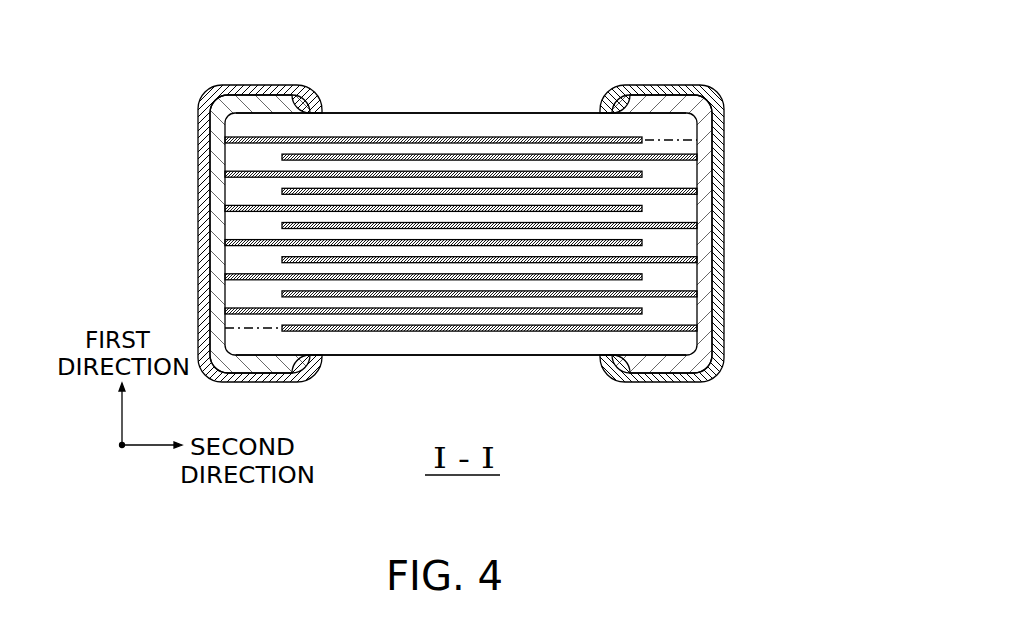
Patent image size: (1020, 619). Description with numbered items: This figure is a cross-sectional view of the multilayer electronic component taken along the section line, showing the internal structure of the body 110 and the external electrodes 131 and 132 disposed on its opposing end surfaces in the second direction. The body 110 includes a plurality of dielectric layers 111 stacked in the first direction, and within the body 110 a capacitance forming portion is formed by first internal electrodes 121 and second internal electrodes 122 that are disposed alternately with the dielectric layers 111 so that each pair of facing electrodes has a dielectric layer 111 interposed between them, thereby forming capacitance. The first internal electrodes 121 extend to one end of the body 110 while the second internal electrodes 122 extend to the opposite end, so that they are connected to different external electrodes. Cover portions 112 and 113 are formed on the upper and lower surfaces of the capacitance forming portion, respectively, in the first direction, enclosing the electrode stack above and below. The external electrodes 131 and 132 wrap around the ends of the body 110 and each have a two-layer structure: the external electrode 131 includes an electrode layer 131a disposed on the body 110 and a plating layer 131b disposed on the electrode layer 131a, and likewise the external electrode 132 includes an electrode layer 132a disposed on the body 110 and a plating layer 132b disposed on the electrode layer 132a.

The body 110 is at (397, 113).
The dielectric layer 111 is at (346, 183).
The cover portion 112 is at (467, 130).
The cover portion 113 is at (378, 340).
The first internal electrode 121 is at (528, 137).
The second internal electrode 122 is at (590, 157).
The external electrode 131 is at (290, 233).
The electrode layer 131a is at (200, 165).
The plating layer 131b is at (213, 193).
The external electrode 132 is at (667, 233).
The electrode layer 132a is at (725, 140).
The plating layer 132b is at (723, 167).